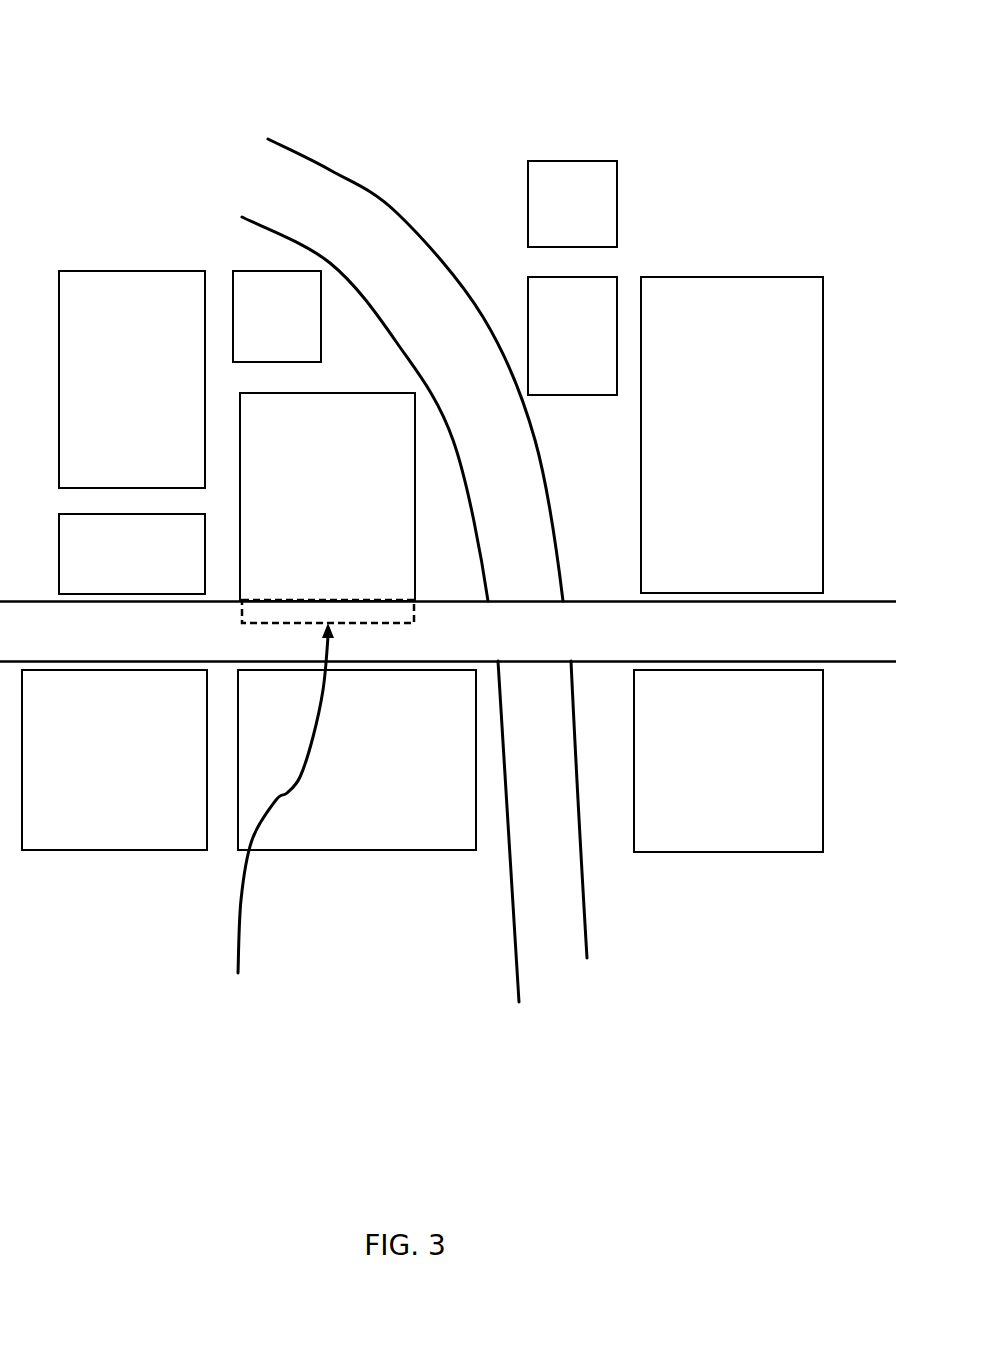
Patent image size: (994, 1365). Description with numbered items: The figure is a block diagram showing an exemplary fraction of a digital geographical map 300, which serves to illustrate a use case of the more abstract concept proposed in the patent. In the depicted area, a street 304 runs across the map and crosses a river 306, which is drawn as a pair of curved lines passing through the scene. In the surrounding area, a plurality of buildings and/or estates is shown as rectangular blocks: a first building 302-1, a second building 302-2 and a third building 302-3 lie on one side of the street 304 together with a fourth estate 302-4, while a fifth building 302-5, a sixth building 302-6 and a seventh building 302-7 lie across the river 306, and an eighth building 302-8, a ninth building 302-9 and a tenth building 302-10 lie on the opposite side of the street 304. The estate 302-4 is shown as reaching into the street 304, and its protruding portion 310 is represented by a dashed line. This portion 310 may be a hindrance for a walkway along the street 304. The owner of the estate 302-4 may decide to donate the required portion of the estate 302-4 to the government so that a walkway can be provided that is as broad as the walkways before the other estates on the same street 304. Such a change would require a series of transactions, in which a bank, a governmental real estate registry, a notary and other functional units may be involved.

The digital geographical map 300 is at (112, 66).
The building or estate 302-1 is at (85, 320).
The building or estate 302-2 is at (111, 584).
The building or estate 302-3 is at (241, 320).
The estate 302-4 is at (287, 480).
The building or estate 302-5 is at (537, 202).
The building or estate 302-6 is at (537, 344).
The building or estate 302-7 is at (676, 352).
The building or estate 302-8 is at (54, 740).
The building or estate 302-9 is at (357, 822).
The building or estate 302-10 is at (708, 828).
The street 304 is at (76, 646).
The river 306 is at (419, 346).
The protruding portion 310 is at (311, 807).